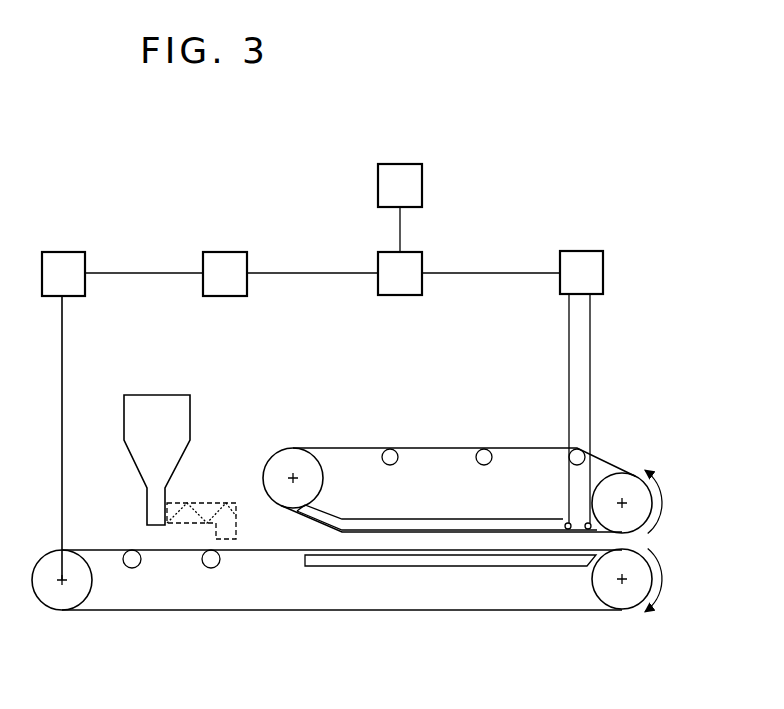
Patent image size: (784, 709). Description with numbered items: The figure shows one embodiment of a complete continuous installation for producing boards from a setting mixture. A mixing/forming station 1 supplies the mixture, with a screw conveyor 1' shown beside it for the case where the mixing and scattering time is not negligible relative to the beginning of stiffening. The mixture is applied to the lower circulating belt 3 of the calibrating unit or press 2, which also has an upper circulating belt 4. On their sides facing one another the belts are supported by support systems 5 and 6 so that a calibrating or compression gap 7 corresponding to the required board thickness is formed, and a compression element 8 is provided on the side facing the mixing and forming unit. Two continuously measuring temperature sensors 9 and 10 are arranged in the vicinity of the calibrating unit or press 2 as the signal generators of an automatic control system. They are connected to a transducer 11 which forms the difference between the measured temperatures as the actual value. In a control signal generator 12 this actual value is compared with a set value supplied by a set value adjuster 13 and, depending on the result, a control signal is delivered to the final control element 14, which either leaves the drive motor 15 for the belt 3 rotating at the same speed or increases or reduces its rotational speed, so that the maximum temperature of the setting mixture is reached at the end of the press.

The mixing/forming station 1 is at (170, 453).
The screw conveyor 1' is at (201, 502).
The calibrating unit or press 2 is at (441, 436).
The lower circulating belt 3 is at (255, 552).
The upper circulating belt 4 is at (546, 447).
The support system 5 is at (430, 522).
The support system 6 is at (466, 562).
The calibrating or compression gap 7 is at (378, 541).
The compression element 8 is at (301, 540).
The temperature sensor 9 is at (586, 523).
The temperature sensor 10 is at (566, 523).
The transducer 11 is at (590, 250).
The control signal generator 12 is at (428, 251).
The set value adjuster 13 is at (422, 167).
The final control element 14 is at (238, 251).
The drive motor 15 is at (78, 251).